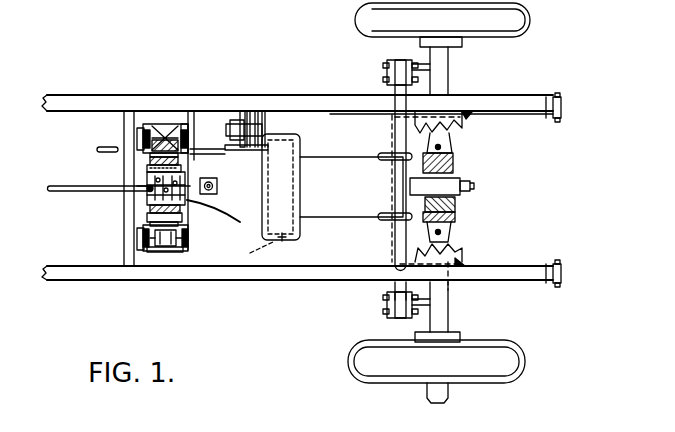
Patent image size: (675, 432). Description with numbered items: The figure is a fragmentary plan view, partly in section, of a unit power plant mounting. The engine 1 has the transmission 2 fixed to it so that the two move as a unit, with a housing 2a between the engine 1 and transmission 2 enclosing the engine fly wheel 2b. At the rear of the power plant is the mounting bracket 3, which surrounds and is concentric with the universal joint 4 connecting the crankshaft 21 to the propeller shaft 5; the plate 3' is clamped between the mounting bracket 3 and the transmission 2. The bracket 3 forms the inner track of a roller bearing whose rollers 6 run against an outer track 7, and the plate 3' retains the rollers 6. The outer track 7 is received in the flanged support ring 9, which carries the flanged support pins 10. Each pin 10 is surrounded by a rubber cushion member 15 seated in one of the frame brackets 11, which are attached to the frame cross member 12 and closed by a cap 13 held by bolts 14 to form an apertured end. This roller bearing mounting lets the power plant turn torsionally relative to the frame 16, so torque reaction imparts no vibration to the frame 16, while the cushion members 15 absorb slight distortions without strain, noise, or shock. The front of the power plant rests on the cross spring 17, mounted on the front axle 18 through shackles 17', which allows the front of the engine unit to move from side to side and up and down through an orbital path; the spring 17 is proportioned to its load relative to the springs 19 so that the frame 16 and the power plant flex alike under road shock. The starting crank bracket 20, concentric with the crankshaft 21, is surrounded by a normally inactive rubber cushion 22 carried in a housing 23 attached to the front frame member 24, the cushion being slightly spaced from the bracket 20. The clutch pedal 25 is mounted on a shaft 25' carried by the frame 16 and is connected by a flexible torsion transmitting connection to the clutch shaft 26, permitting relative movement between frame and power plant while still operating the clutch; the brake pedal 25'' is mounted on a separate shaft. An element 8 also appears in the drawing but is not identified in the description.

The engine 1 is at (323, 207).
The transmission 2 is at (214, 180).
The housing 2a is at (300, 178).
The engine fly wheel 2b is at (249, 251).
The mounting bracket 3 is at (129, 171).
The plate 3' is at (180, 175).
The universal joint 4 is at (150, 195).
The propeller shaft 5 is at (47, 188).
The rollers 6 is at (150, 160).
The outer track 7 is at (138, 140).
The link 8 is at (222, 220).
The flanged support ring 9 is at (152, 216).
The flanged support pins 10 is at (157, 124).
The frame brackets 11 is at (138, 120).
The frame cross member 12 is at (125, 243).
The cap 13 is at (190, 135).
The bolts 14 is at (170, 252).
The cushion members 15 is at (187, 124).
The frame 16 is at (60, 95).
The cross spring 17 is at (386, 197).
The shackles 17' is at (352, 202).
The front axle 18 is at (448, 72).
The springs 19 is at (546, 119).
The starting crank bracket 20 is at (447, 187).
The crankshaft 21 is at (150, 190).
The rubber cushion 22 is at (455, 207).
The housing 23 is at (457, 217).
The front frame member 24 is at (475, 113).
The clutch pedal 25 is at (275, 91).
The shaft 25' is at (249, 73).
The brake pedal 25'' is at (287, 136).
The clutch shaft 26 is at (265, 111).